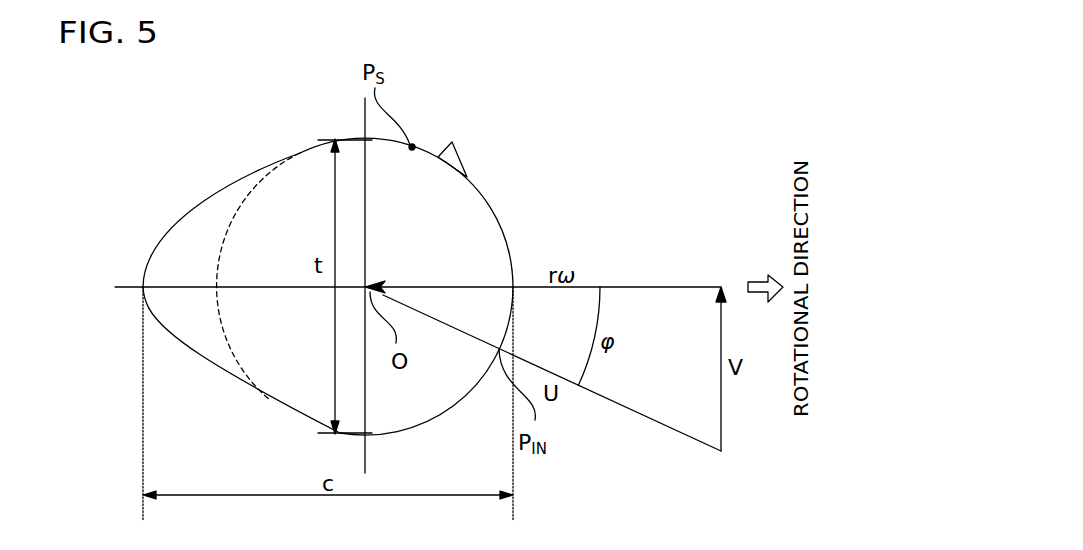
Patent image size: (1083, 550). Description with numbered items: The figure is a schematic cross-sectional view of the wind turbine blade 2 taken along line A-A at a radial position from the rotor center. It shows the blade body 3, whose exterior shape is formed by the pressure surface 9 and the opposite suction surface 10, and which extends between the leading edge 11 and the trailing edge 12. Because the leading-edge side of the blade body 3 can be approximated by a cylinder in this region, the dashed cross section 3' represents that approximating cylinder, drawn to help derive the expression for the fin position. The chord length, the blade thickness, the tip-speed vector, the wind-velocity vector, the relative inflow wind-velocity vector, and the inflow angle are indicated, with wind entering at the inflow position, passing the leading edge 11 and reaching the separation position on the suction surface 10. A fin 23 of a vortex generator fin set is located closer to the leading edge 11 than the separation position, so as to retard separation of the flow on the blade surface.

The wind turbine blade 2 is at (548, 157).
The blade body 3 is at (328, 289).
The cross section of a cylinder 3' is at (258, 254).
The pressure surface 9 is at (217, 368).
The suction surface 10 is at (213, 198).
The leading edge 11 is at (513, 287).
The trailing edge 12 is at (143, 287).
The fin 23 is at (443, 150).